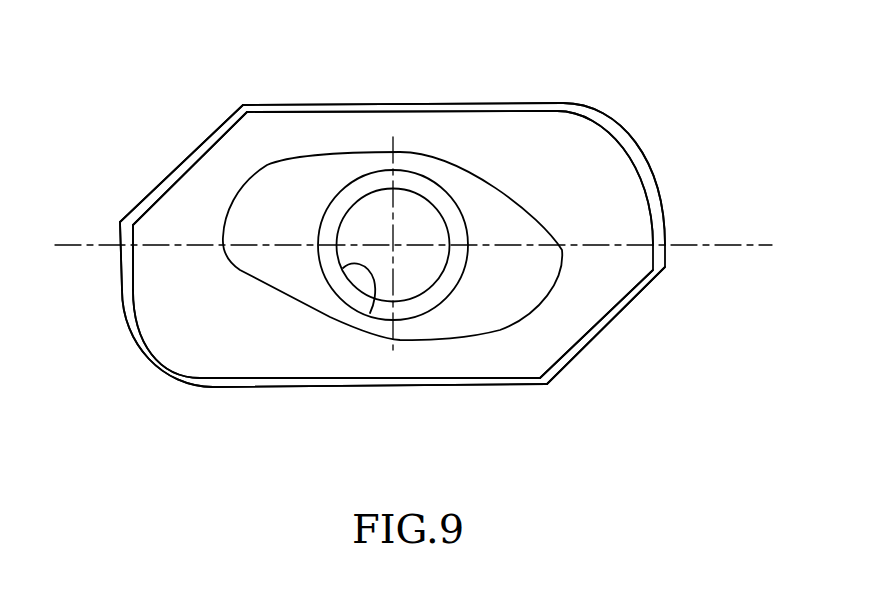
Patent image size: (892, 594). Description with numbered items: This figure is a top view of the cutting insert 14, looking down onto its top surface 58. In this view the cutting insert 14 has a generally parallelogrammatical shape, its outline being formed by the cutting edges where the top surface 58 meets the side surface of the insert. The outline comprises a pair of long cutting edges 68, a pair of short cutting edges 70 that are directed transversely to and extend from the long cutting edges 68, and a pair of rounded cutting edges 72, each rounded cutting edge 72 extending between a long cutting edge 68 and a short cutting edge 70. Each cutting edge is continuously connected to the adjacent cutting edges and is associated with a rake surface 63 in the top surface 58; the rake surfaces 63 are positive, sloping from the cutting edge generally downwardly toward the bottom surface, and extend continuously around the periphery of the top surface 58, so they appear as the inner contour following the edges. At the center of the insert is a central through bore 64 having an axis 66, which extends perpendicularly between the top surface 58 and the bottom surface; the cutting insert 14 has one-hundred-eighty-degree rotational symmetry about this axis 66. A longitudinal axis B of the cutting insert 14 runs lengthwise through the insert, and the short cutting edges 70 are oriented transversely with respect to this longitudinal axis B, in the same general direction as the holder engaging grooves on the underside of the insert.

The cutting insert 14 is at (660, 107).
The top surface 58 is at (462, 145).
The rake surface 63 is at (152, 272).
The central through bore 64 is at (370, 313).
The axis 66 is at (393, 246).
The long cutting edges 68 is at (402, 103).
The short cutting edges 70 is at (197, 142).
The rounded cutting edges 72 is at (660, 182).
The longitudinal axis B is at (700, 248).